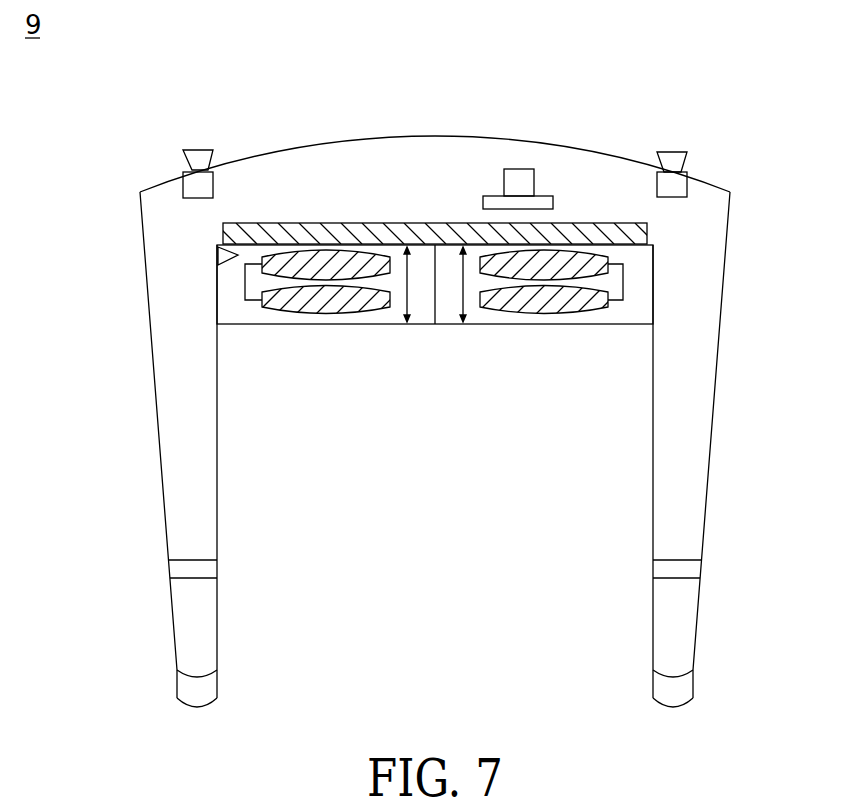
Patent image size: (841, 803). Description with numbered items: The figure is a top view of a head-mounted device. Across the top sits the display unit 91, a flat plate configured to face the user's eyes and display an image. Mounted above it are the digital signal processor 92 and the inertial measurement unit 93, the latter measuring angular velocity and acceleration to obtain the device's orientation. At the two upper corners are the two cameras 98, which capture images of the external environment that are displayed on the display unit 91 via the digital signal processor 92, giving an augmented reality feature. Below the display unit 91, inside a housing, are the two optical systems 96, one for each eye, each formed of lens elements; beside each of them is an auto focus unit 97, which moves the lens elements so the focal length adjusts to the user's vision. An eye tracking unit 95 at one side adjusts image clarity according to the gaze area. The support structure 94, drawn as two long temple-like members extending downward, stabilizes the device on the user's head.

The display unit 91 is at (617, 233).
The digital signal processor 92 is at (491, 196).
The inertial measurement unit 93 is at (521, 184).
The support structure 94 is at (687, 521).
The eye tracking unit 95 is at (218, 252).
The optical system 96 is at (337, 297).
The auto focus unit 97 is at (245, 284).
The camera 98 is at (200, 163).